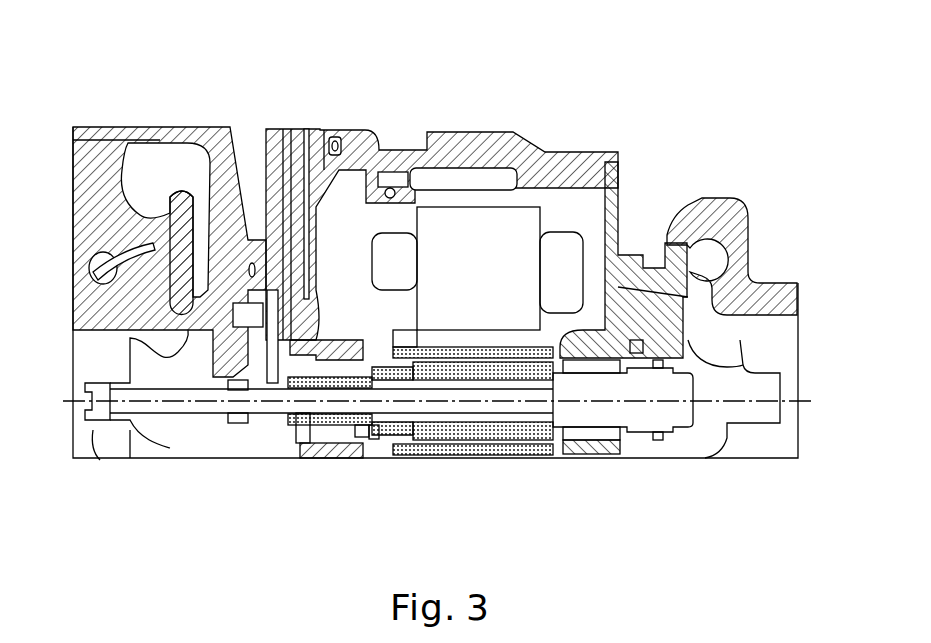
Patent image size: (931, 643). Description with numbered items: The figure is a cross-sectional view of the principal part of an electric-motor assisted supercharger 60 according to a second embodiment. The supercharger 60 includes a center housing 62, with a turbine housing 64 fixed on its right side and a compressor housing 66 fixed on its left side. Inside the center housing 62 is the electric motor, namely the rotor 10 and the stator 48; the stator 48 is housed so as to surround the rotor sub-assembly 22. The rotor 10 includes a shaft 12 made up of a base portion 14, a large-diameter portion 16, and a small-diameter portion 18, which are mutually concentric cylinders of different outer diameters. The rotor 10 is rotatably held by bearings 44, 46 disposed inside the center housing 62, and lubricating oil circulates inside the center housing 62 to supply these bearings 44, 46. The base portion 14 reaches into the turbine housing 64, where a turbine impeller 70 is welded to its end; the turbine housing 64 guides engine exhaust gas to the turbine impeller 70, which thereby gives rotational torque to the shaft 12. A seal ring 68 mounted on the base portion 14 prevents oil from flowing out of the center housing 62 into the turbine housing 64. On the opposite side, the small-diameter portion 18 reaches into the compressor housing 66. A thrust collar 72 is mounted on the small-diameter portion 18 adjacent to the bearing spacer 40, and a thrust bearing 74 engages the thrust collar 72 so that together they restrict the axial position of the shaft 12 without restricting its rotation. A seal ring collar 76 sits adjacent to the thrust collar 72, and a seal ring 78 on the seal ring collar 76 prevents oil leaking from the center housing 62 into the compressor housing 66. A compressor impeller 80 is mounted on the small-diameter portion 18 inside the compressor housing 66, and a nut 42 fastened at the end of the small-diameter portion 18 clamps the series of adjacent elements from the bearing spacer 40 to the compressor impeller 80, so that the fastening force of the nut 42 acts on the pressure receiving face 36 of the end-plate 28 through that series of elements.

The rotor 10 is at (473, 457).
The shaft 12 is at (443, 437).
The base portion 14 is at (627, 432).
The large-diameter portion 16 is at (410, 437).
The small-diameter portion 18 is at (202, 414).
The rotor sub-assembly 22 is at (497, 444).
The end-plate 28 is at (388, 450).
The pressure receiving face 36 is at (374, 440).
The bearing spacer 40 is at (362, 437).
The nut 42 is at (97, 440).
The bearing 44 is at (589, 454).
The bearing 46 is at (330, 442).
The stator 48 is at (513, 225).
The electric-motor assisted supercharger 60 is at (439, 297).
The center housing 62 is at (497, 131).
The turbine housing 64 is at (723, 197).
The compressor housing 66 is at (111, 127).
The seal ring 68 is at (658, 440).
The turbine impeller 70 is at (693, 450).
The thrust collar 72 is at (300, 450).
The thrust bearing 74 is at (272, 442).
The seal ring collar 76 is at (251, 430).
The seal ring 78 is at (235, 430).
The compressor impeller 80 is at (187, 422).